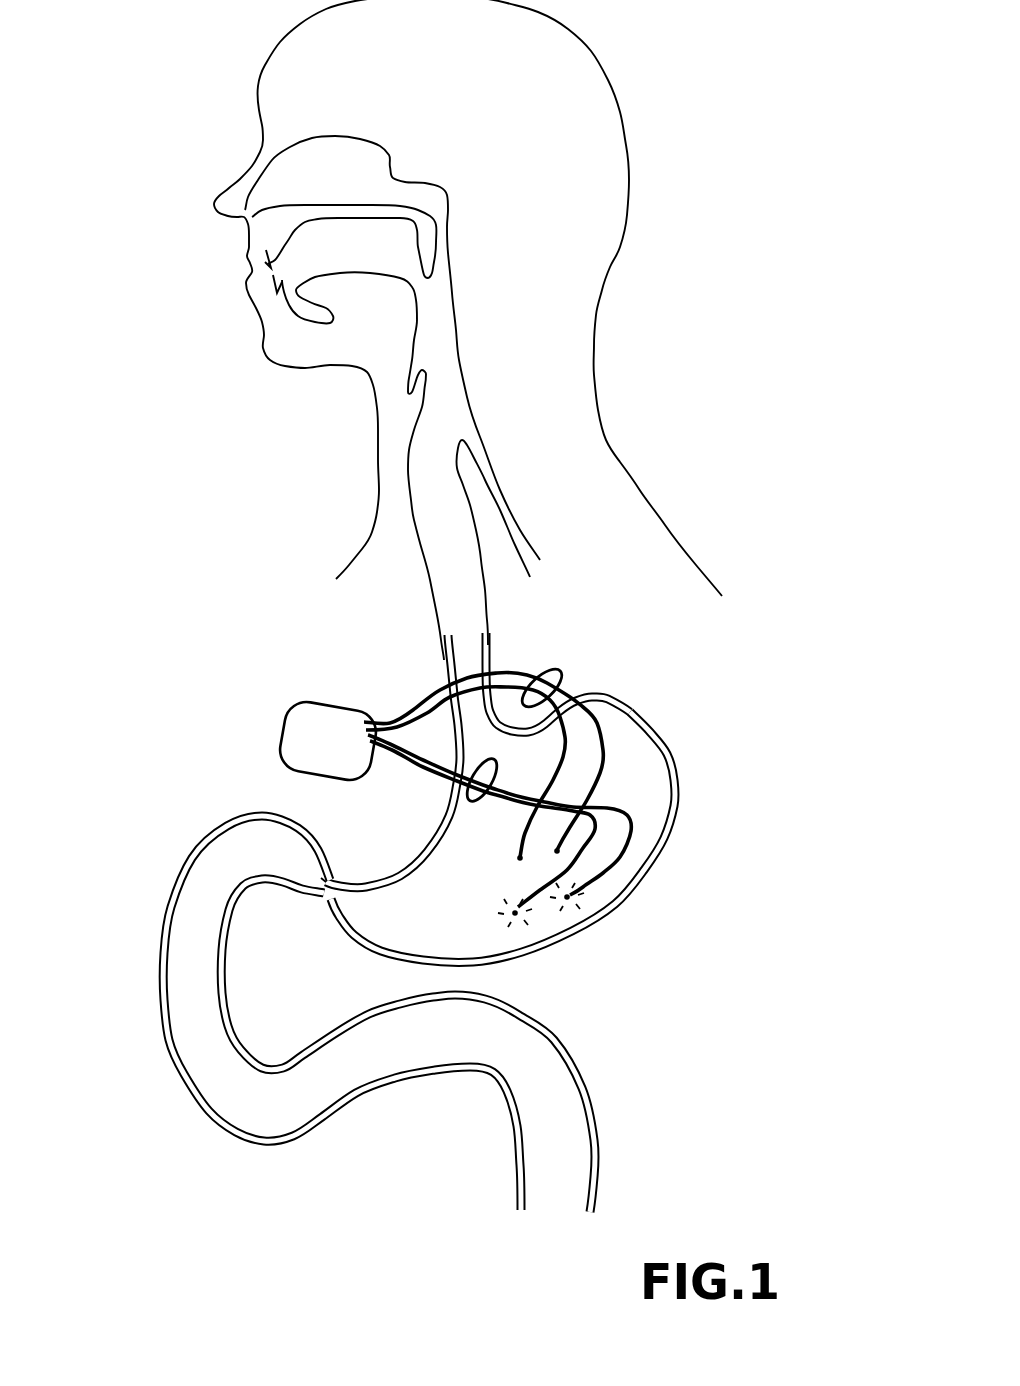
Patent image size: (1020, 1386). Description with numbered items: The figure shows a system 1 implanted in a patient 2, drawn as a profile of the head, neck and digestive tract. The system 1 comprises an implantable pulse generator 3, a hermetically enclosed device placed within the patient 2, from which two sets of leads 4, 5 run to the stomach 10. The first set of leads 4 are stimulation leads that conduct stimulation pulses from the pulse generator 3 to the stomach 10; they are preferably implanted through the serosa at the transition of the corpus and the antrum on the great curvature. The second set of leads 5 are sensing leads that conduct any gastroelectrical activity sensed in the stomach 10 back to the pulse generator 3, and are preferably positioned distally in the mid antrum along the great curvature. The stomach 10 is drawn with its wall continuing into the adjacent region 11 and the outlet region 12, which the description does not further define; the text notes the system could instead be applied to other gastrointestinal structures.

The system 1 is at (172, 462).
The patient 2 is at (617, 462).
The implantable pulse generator 3 is at (293, 717).
The first set of leads 4 is at (600, 663).
The second set of leads 5 is at (447, 806).
The stomach 10 is at (675, 828).
The fundus of stomach 11 is at (633, 709).
The pylorus / duodenum 12 is at (333, 915).